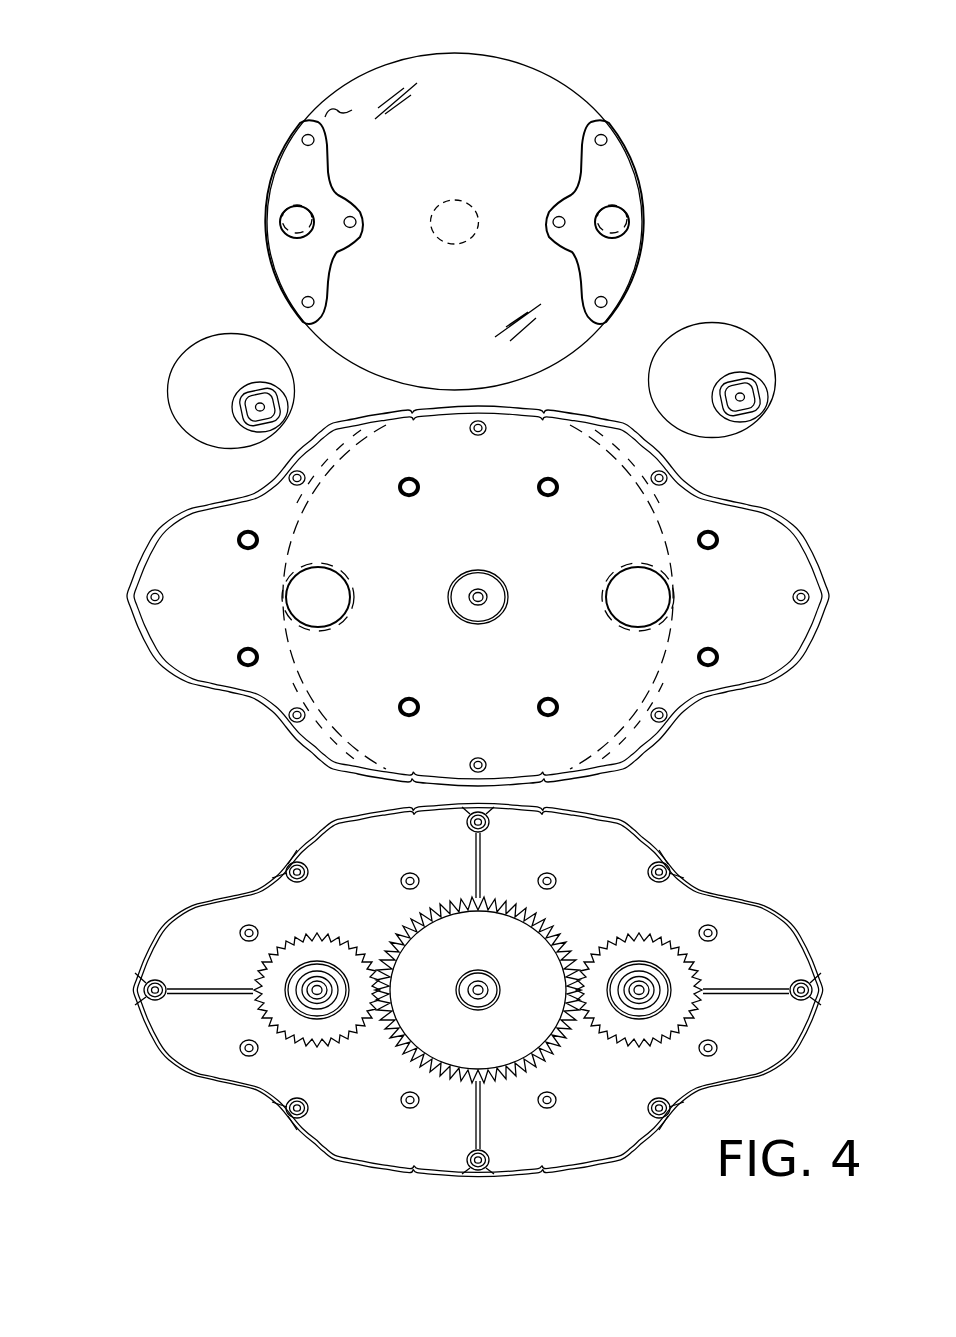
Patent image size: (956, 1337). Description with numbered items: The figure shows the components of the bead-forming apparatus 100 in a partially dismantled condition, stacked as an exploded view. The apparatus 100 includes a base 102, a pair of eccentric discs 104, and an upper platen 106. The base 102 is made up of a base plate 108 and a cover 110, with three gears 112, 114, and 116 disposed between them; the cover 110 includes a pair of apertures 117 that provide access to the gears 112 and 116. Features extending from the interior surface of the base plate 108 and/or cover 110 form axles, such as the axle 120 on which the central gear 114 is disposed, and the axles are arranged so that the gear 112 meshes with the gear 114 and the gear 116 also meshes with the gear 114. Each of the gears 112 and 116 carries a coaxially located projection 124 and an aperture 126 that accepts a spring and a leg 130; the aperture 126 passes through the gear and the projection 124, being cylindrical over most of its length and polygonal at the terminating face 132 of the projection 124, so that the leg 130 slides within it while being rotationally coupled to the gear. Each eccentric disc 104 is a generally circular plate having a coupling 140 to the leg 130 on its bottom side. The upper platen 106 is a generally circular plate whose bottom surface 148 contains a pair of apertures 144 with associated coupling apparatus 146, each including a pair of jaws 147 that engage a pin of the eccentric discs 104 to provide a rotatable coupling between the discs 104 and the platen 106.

The apparatus 100 is at (78, 88).
The base 102 is at (622, 770).
The eccentric discs 104 is at (205, 348).
The upper platen 106 is at (548, 76).
The base plate 108 is at (690, 898).
The cover 110 is at (278, 752).
The gear 112 is at (262, 967).
The gear 114 is at (542, 920).
The gear 116 is at (690, 963).
The apertures 117 is at (318, 566).
The axle 120 is at (484, 588).
The projection 124 is at (338, 967).
The aperture 126 is at (320, 975).
The leg 130 is at (293, 1010).
The terminating face 132 is at (342, 995).
The coupling 140 is at (238, 412).
The apertures 144 is at (292, 220).
The coupling apparatus 146 is at (283, 170).
The jaws 147 is at (290, 236).
The bottom surface 148 is at (338, 108).